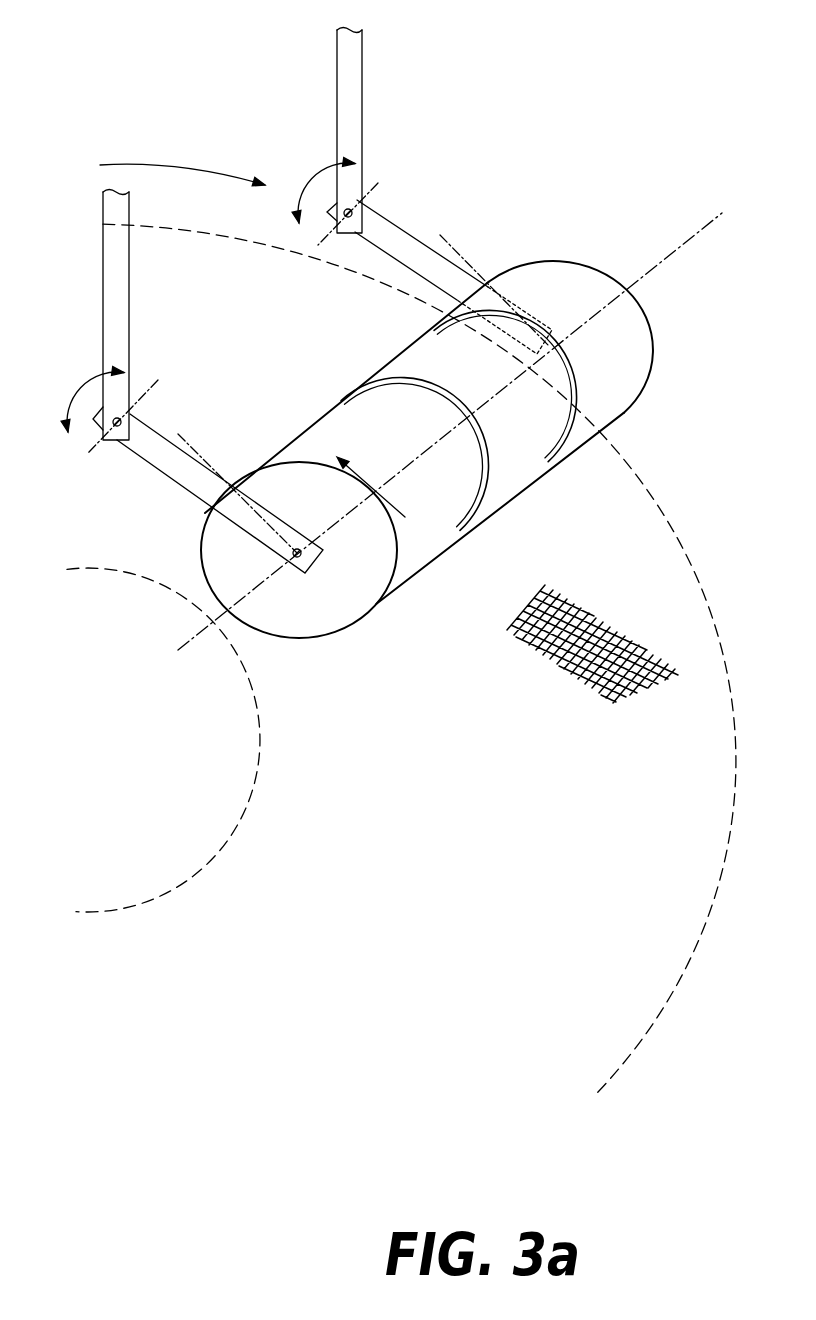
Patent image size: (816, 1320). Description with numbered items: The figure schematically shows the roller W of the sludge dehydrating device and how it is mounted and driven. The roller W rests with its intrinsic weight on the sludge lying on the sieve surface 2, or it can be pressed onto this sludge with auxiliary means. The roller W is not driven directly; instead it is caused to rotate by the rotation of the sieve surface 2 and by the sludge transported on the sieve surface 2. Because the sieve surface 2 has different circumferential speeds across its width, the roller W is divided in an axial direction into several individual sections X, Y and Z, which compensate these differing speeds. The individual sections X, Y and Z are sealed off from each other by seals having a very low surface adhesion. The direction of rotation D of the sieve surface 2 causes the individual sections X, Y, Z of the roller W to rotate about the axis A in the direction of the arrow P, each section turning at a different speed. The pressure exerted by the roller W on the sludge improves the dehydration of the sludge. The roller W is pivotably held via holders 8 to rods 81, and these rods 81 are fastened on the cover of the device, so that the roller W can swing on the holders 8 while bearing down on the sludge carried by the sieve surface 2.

The rods 81 is at (118, 297).
The holders 8 is at (158, 467).
The sieve surface 2 is at (622, 553).
The roller W is at (433, 628).
The axis A is at (653, 262).
The arrow P is at (357, 475).
The section X is at (430, 520).
The section Y is at (507, 463).
The section Z is at (612, 380).
The direction of rotation D is at (182, 160).